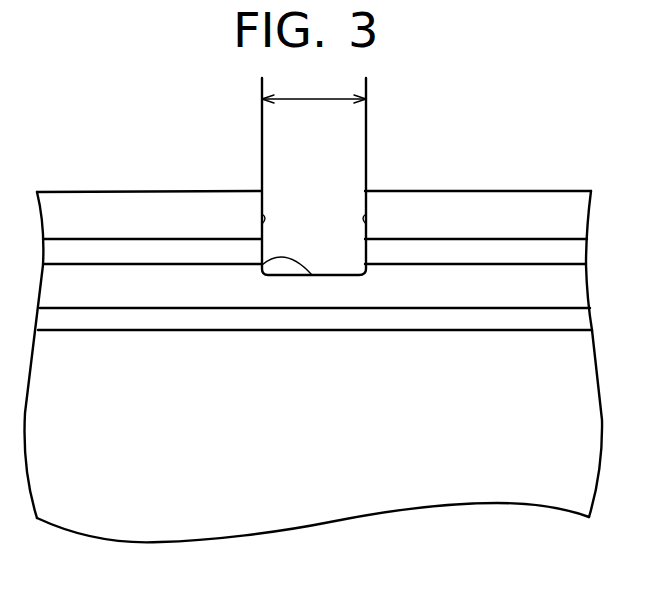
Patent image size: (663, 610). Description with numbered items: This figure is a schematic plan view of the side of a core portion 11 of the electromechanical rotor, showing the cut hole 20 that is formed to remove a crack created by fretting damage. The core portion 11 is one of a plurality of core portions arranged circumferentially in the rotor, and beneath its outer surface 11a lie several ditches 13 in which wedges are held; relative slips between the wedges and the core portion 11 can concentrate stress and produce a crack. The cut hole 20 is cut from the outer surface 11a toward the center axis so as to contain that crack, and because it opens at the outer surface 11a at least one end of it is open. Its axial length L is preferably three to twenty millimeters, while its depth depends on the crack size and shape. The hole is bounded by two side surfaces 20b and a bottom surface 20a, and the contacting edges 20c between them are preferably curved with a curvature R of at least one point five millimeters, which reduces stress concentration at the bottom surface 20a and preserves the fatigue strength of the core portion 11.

The core portion 11 is at (570, 205).
The outer surface 11a is at (465, 190).
The ditch 13 is at (570, 292).
The cut hole 20 is at (285, 210).
The bottom surface 20a is at (262, 265).
The side surface 20b is at (264, 221).
The contacting edge 20c is at (264, 277).